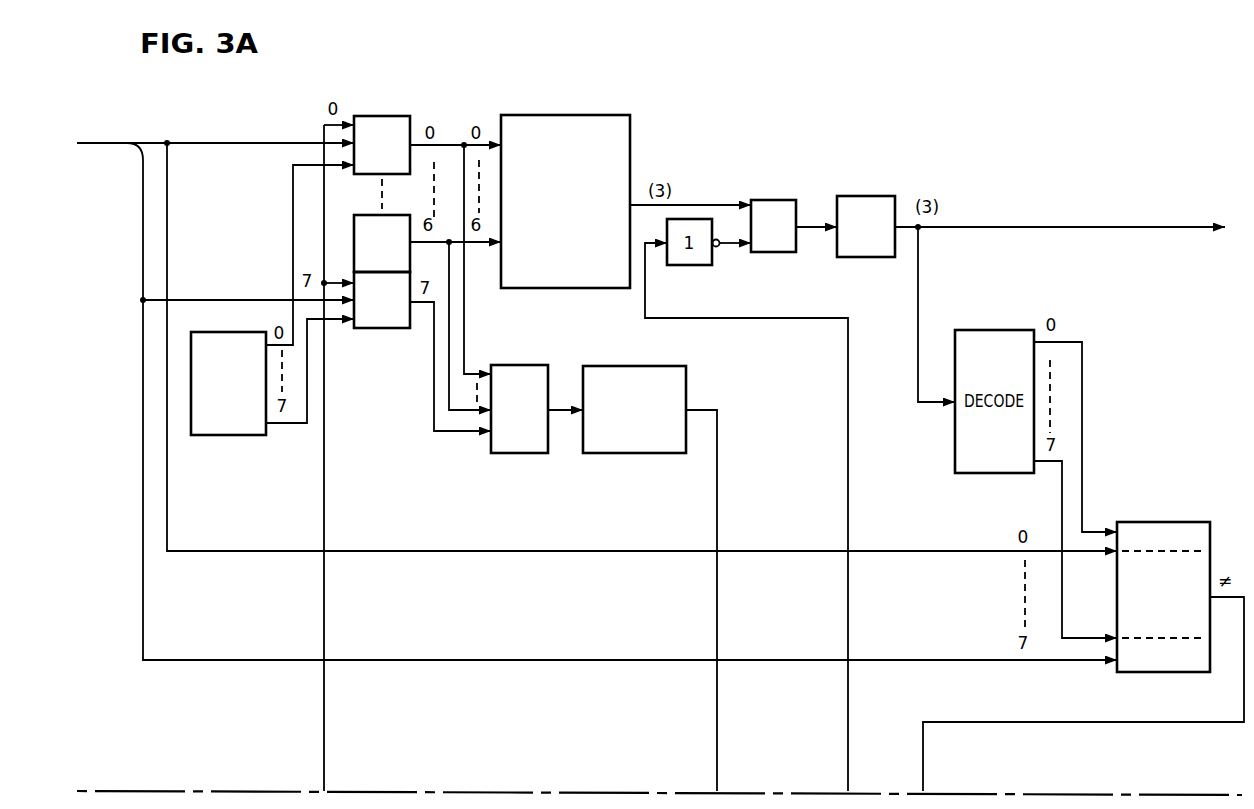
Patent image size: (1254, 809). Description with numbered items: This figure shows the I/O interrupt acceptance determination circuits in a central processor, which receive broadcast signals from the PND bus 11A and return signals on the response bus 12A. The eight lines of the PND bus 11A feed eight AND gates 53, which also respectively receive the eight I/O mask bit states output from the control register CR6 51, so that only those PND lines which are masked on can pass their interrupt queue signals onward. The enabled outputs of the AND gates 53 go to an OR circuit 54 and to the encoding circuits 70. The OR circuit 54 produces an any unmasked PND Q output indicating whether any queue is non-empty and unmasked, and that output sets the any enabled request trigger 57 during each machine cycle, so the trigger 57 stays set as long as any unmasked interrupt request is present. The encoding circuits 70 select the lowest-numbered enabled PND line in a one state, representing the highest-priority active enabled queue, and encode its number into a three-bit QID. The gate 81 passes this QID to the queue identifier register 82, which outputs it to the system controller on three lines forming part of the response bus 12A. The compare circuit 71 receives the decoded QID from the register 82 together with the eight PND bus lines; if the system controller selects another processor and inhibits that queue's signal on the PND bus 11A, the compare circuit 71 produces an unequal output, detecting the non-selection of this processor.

The PND bus 11A is at (120, 143).
The response bus 12A is at (1060, 226).
The control register CR6 51 is at (245, 435).
The AND gates 53 is at (372, 328).
The OR circuit 54 is at (530, 453).
The any enabled request trigger 57 is at (648, 453).
The encoding circuits 70 is at (605, 115).
The gate 81 is at (773, 203).
The queue identifier register 82 is at (877, 198).
The compare circuit 71 is at (1169, 522).